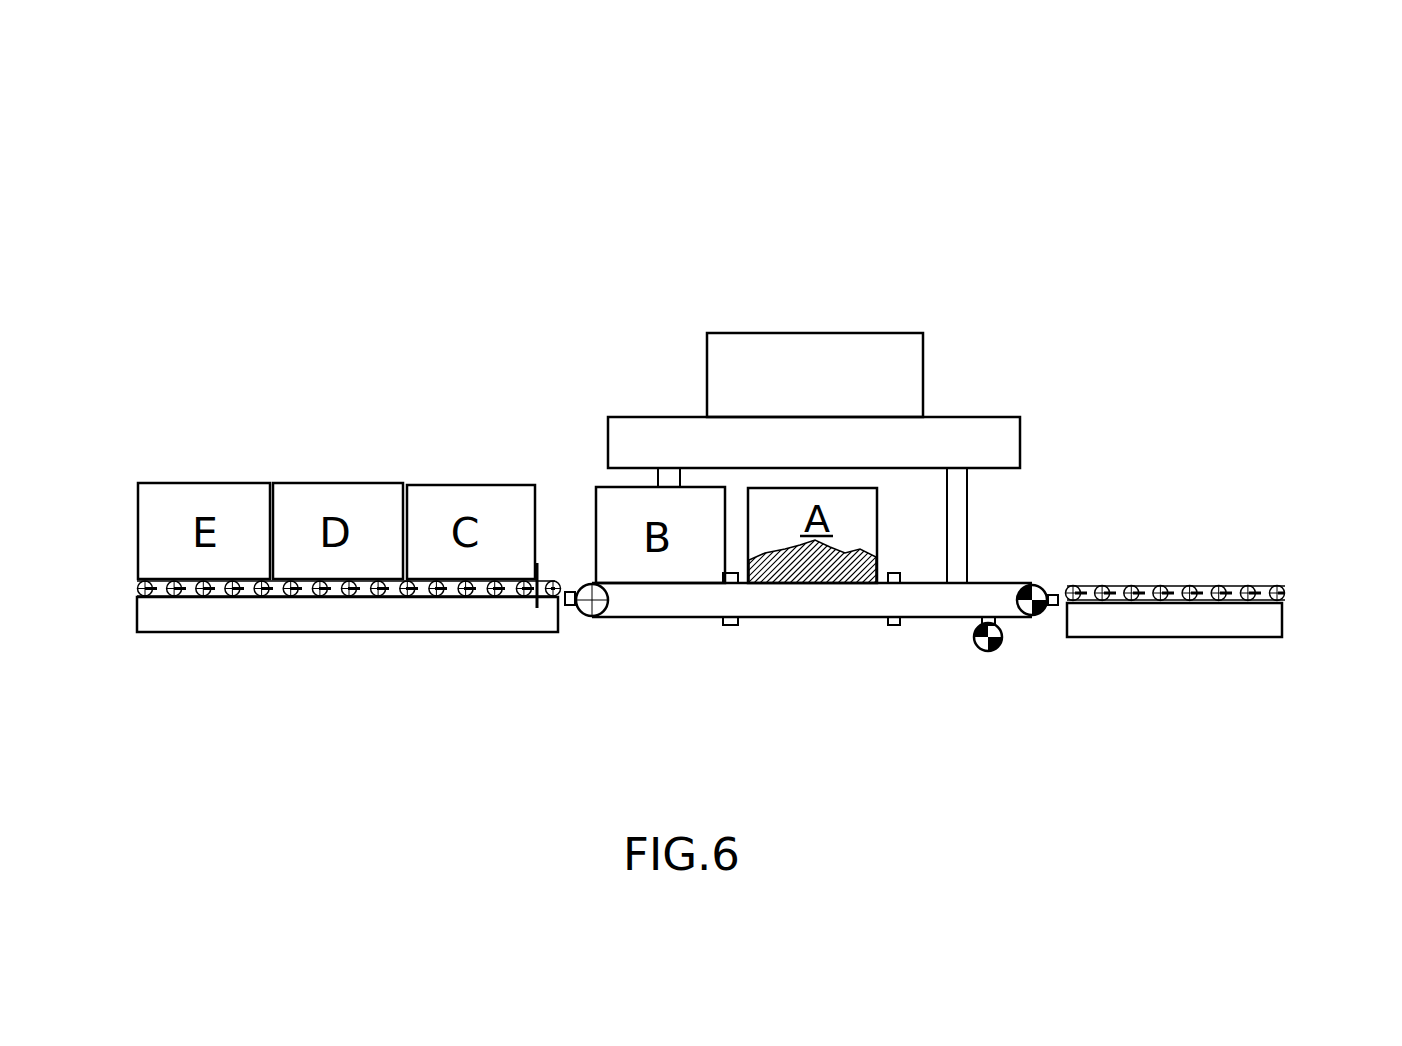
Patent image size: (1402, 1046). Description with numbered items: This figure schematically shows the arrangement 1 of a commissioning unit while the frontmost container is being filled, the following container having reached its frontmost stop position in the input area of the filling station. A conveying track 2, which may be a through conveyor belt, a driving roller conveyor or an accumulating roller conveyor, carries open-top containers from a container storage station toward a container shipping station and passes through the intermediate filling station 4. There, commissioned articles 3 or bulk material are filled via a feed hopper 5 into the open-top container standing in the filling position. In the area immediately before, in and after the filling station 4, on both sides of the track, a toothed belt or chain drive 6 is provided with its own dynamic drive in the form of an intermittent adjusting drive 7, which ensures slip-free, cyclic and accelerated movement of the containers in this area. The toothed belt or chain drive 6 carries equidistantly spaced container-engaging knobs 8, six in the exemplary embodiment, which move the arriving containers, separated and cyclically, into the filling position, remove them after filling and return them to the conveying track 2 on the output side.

The arrangement 1 is at (162, 218).
The conveying track 2 is at (193, 615).
The articles 3 is at (836, 562).
The filling station 4 is at (615, 254).
The feed hopper 5 is at (825, 353).
The toothed belt or chain drive 6 is at (642, 620).
The intermittent adjusting drive 7 is at (1040, 615).
The container-engaging knobs 8 is at (900, 622).